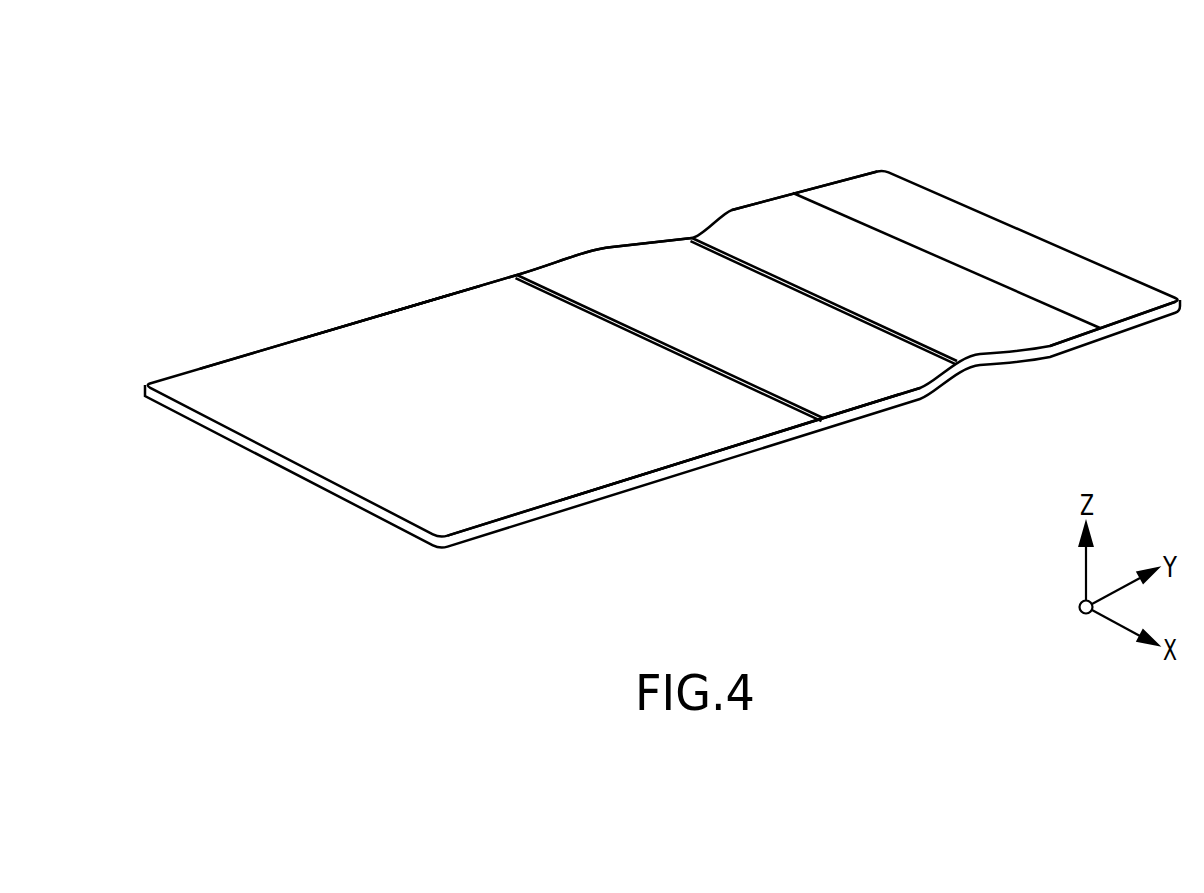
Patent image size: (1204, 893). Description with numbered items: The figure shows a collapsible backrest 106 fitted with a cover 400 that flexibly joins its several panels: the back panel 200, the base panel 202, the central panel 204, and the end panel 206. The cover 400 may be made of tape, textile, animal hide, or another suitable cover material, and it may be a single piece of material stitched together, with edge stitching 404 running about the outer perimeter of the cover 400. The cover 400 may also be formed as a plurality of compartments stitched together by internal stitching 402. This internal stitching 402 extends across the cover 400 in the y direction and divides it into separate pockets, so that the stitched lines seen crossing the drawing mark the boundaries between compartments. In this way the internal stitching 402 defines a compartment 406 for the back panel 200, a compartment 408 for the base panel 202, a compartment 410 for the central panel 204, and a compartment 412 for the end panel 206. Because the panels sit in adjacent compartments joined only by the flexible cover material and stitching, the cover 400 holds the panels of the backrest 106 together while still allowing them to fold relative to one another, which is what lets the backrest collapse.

The collapsible backrest 106 is at (945, 128).
The back panel 200 is at (600, 477).
The base panel 202 is at (833, 405).
The central panel 204 is at (750, 216).
The end panel 206 is at (1103, 318).
The cover 400 is at (446, 312).
The internal stitching 402 is at (516, 282).
The edge stitching 404 is at (331, 343).
The compartment 406 is at (388, 327).
The compartment 408 is at (649, 260).
The compartment 410 is at (799, 240).
The compartment 412 is at (873, 202).